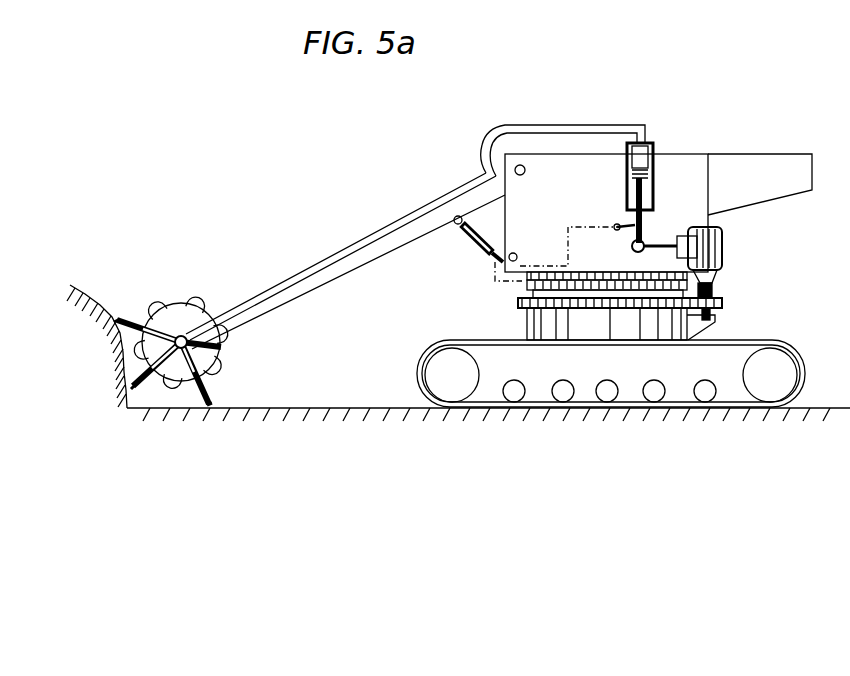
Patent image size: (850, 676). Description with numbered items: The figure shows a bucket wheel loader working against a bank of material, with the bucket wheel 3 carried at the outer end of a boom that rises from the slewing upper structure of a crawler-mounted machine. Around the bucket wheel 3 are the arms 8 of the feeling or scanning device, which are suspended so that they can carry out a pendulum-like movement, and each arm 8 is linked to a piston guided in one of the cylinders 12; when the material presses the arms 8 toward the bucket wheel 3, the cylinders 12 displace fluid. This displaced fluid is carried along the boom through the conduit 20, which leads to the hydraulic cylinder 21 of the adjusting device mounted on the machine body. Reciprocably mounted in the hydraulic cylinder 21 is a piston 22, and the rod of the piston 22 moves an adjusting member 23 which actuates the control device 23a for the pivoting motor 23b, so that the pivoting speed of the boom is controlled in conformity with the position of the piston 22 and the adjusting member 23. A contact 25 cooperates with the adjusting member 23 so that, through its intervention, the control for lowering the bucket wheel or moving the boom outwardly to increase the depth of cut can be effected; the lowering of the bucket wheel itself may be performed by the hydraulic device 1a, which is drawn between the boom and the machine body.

The hydraulic device 1a is at (485, 247).
The bucket wheel 3 is at (220, 368).
The arms 8 is at (117, 322).
The cylinders 12 is at (152, 335).
The conduit 20 is at (584, 125).
The hydraulic cylinder 21 is at (655, 143).
The piston 22 is at (654, 173).
The adjusting member 23 is at (660, 245).
The control device 23a is at (697, 245).
The pivoting motor 23b is at (723, 262).
The contact 25 is at (615, 226).